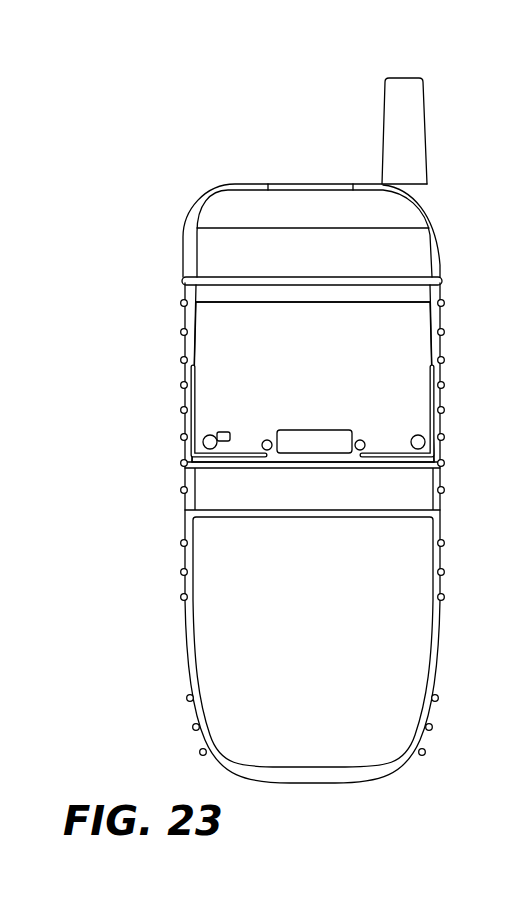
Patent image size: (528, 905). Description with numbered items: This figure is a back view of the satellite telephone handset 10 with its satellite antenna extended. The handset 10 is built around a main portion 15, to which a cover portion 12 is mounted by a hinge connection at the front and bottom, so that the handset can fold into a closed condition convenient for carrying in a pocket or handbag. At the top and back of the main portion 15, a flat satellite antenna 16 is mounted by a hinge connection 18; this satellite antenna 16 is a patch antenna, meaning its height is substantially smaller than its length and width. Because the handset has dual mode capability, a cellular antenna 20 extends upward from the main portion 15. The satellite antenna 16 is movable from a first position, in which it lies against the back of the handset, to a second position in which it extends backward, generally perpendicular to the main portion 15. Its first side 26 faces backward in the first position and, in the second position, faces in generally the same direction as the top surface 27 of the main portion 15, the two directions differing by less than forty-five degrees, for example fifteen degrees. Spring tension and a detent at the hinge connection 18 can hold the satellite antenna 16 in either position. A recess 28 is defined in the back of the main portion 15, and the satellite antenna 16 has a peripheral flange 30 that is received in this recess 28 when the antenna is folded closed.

The satellite telephone handset 10 is at (282, 430).
The cover portion 12 is at (213, 572).
The main portion 15 is at (185, 367).
The flat satellite antenna 16 is at (305, 199).
The hinge connection 18 is at (293, 200).
The cellular antenna 20 is at (395, 93).
The first side 26 is at (413, 238).
The top surface 27 is at (322, 180).
The recess 28 is at (420, 397).
The peripheral flange 30 is at (347, 290).